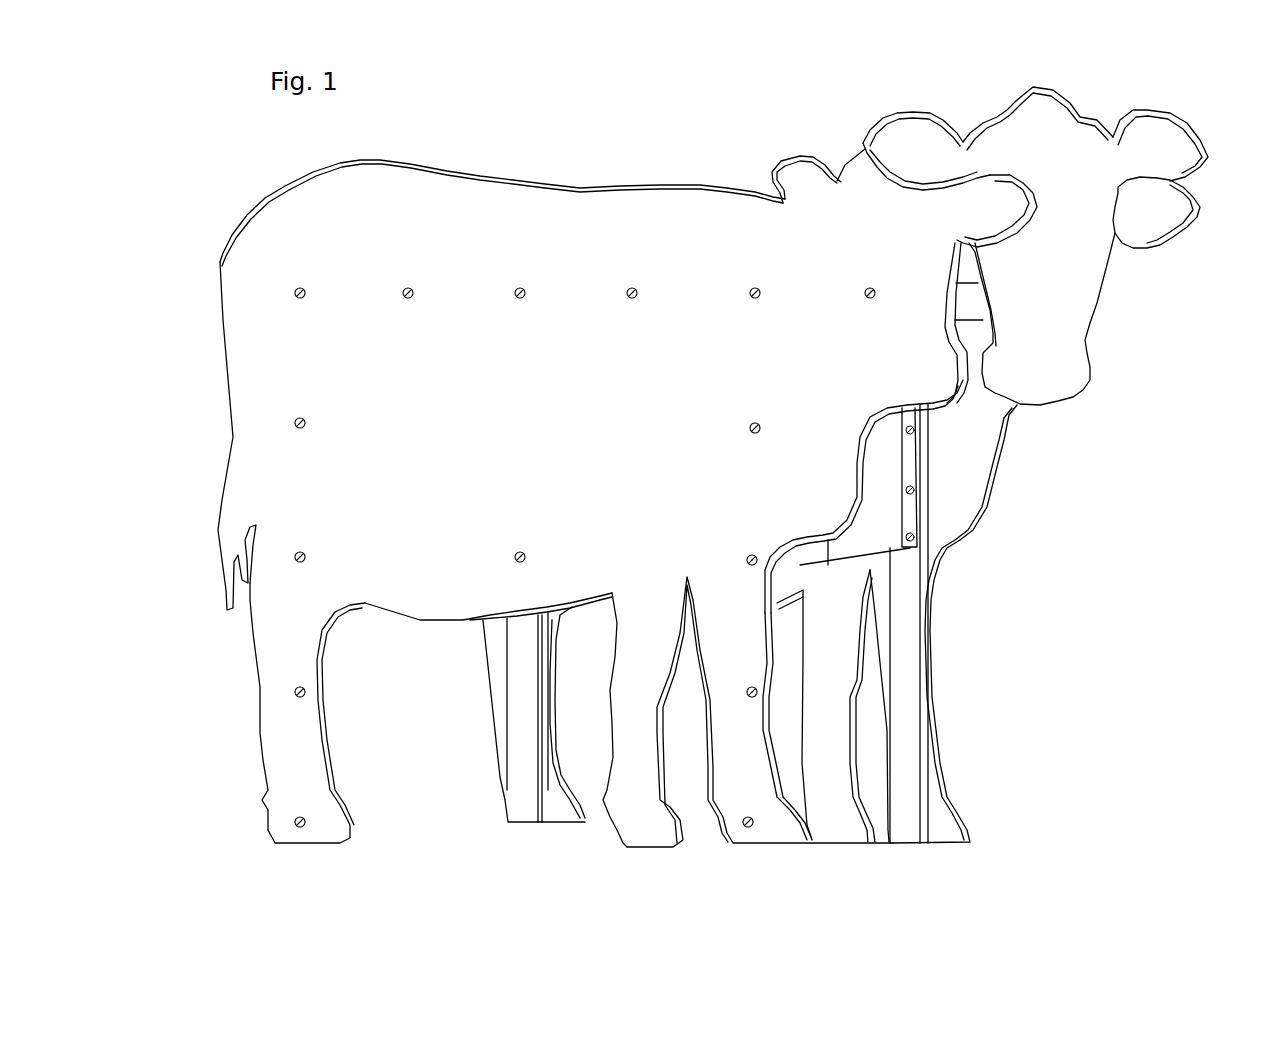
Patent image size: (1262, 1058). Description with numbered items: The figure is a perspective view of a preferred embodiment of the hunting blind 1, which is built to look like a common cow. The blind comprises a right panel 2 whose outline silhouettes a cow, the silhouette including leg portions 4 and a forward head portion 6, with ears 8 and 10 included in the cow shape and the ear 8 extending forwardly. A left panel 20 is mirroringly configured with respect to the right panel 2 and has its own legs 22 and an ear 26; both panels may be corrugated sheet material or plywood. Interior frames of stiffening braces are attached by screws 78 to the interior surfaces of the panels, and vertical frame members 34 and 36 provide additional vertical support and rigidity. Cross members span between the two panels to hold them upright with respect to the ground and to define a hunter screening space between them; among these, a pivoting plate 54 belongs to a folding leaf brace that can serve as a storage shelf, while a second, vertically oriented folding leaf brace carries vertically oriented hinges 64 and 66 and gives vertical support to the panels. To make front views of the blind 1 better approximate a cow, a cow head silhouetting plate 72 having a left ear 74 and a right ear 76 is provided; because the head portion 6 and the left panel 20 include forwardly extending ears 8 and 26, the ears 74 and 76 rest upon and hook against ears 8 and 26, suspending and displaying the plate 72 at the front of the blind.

The hunting blind 1 is at (586, 150).
The right panel 2 is at (490, 222).
The leg portions 4 is at (290, 753).
The forward head portion 6 is at (887, 257).
The ear 8 is at (1000, 203).
The ear 10 is at (790, 180).
The left panel 20 is at (960, 507).
The legs 22 is at (560, 810).
The ear 26 is at (1160, 203).
The vertical frame member 34 is at (530, 787).
The vertical frame member 36 is at (927, 842).
The pivoting plate 54 is at (810, 560).
The vertically oriented hinge 64 is at (867, 540).
The vertically oriented hinge 66 is at (913, 457).
The cow head silhouetting plate 72 is at (1040, 277).
The left ear 74 is at (913, 150).
The right ear 76 is at (1170, 143).
The screws 78 is at (408, 293).